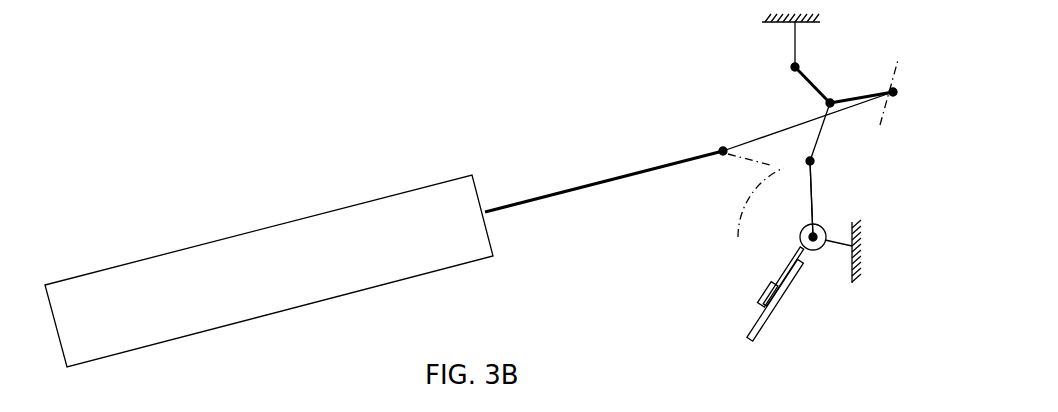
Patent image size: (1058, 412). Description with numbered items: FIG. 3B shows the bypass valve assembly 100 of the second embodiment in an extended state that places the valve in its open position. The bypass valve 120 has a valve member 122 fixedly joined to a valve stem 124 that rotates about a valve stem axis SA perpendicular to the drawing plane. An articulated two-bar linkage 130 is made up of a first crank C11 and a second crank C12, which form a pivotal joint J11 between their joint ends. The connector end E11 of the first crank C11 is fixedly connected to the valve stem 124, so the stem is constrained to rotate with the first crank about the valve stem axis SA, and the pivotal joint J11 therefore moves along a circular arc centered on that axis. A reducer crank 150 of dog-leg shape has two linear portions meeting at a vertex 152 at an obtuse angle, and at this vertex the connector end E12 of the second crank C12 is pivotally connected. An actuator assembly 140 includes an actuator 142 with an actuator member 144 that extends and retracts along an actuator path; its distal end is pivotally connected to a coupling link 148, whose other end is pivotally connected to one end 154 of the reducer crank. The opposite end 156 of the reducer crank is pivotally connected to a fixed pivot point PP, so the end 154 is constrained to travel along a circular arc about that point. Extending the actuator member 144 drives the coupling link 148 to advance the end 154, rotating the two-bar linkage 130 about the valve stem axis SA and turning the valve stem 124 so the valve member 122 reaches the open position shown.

The pedal assembly 100 is at (400, 93).
The bypass valve 120 is at (838, 306).
The valve member 122 is at (762, 325).
The valve stem 124 is at (826, 241).
The articulated two-bar linkage 130 is at (833, 175).
The actuator assembly 140 is at (477, 155).
The actuator 142 is at (275, 237).
The actuator member 144 is at (606, 182).
The coupling link 148 is at (755, 141).
The reducer crank 150 is at (859, 78).
The vertex 152 is at (831, 102).
The end of the reducer crank 154 is at (895, 92).
The opposite end of the reducer crank 156 is at (792, 70).
The fixed pivot point PP is at (795, 66).
The connector end of the first crank E11 is at (800, 236).
The connector end of the second crank E12 is at (829, 104).
The first crank C11 is at (813, 200).
The second crank C12 is at (820, 140).
The pivotal joint J11 is at (810, 164).
The valve stem axis SA is at (820, 249).